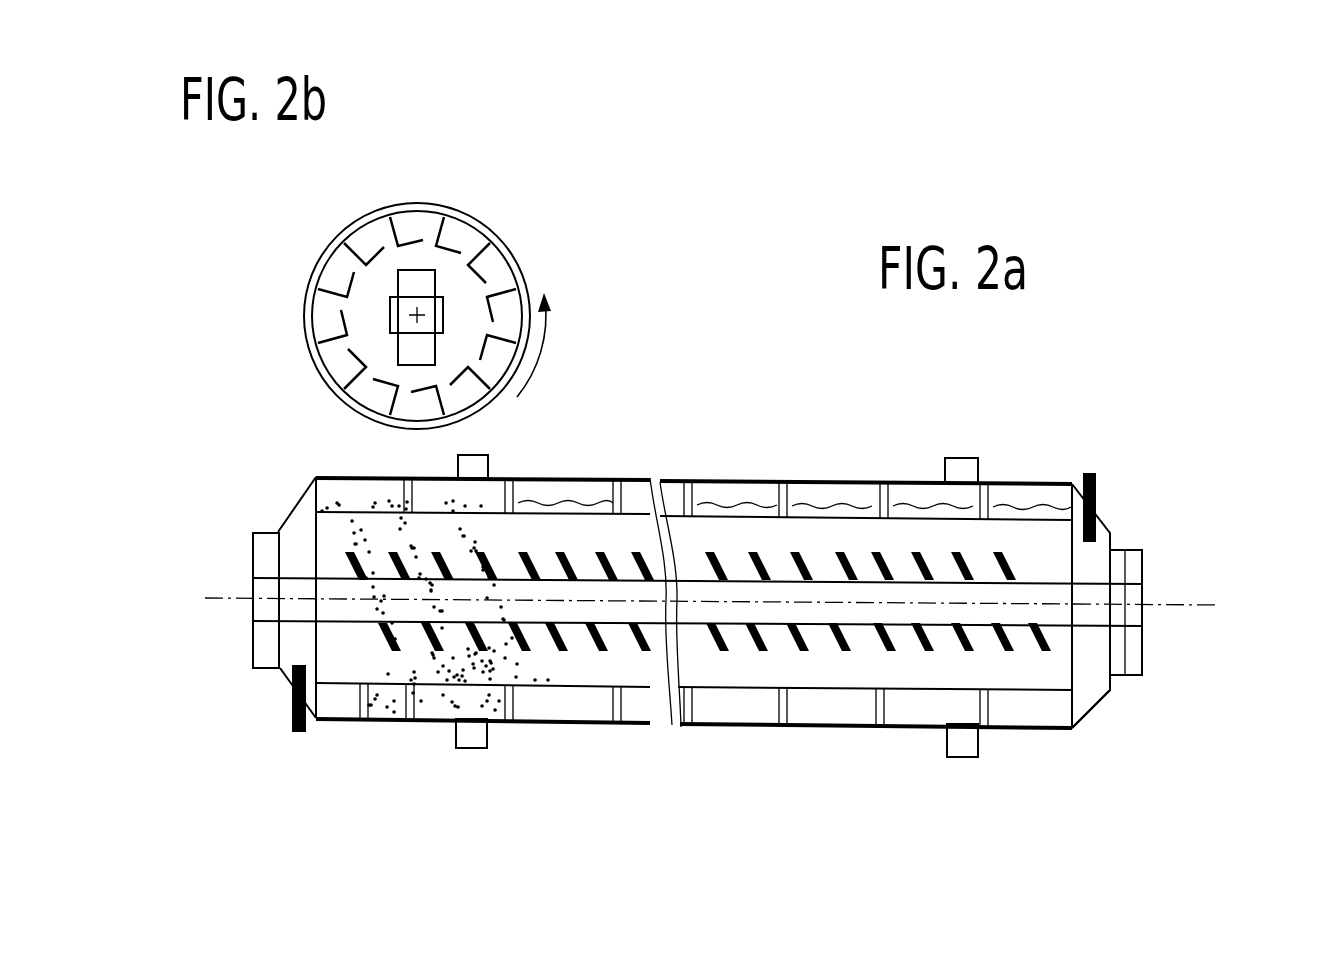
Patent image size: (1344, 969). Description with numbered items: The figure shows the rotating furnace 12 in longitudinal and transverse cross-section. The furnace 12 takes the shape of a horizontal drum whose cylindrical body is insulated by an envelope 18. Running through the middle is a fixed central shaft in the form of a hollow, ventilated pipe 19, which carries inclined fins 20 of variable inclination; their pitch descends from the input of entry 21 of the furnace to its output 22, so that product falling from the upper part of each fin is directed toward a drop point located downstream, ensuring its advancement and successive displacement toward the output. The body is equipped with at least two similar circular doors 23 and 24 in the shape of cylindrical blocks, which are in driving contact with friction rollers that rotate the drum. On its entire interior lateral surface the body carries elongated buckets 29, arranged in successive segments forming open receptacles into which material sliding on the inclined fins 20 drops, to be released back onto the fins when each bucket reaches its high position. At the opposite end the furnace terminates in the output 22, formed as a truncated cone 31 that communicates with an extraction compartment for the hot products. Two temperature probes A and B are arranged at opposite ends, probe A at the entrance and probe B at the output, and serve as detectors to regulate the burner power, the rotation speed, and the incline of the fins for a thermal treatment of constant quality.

In FIG. 2a, the rotating furnace 12 is at (637, 447).
In FIG. 2b, the insulation envelope 18 is at (500, 242).
In FIG. 2a, the insulation envelope 18 is at (723, 483).
In FIG. 2a, the hollow ventilated pipe 19 is at (1128, 595).
In FIG. 2b, the inclined fins 20 is at (420, 287).
In FIG. 2a, the inclined fins 20 is at (378, 640).
In FIG. 2a, the input of entry 21 is at (248, 510).
In FIG. 2a, the output 22 is at (1163, 575).
In FIG. 2a, the circular door 23 is at (472, 735).
In FIG. 2a, the circular door 24 is at (960, 750).
In FIG. 2b, the elongated buckets 29 is at (497, 313).
In FIG. 2a, the elongated buckets 29 is at (918, 485).
In FIG. 2a, the truncated cone 31 is at (1077, 690).
In FIG. 2a, the temperature probe A is at (280, 750).
In FIG. 2a, the temperature probe B is at (1112, 460).